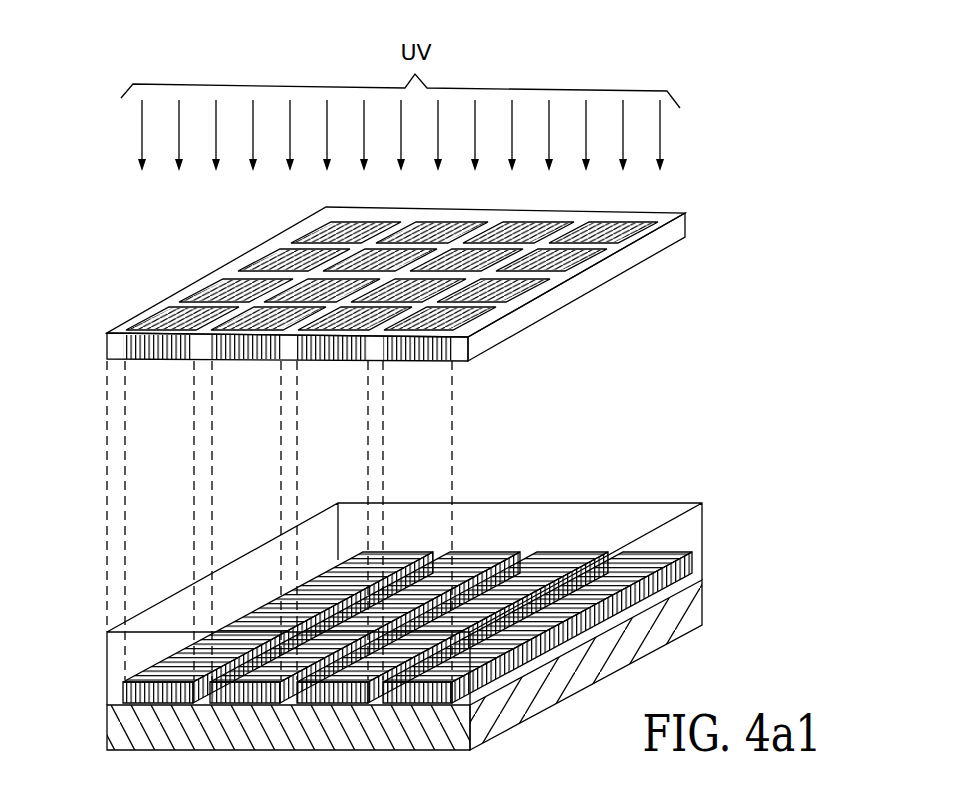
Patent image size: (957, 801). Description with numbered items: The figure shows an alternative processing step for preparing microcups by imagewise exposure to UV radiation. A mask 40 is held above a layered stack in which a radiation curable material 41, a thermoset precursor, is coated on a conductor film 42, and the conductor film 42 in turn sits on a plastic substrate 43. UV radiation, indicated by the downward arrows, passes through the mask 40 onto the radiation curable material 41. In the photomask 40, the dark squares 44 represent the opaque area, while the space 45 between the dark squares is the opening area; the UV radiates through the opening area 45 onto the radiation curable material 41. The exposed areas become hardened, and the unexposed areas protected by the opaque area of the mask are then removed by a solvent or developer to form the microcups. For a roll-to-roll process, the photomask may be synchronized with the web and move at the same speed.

The mask 40 is at (617, 268).
The radiation curable material 41 is at (115, 643).
The conductor film 42 is at (135, 687).
The plastic substrate 43 is at (115, 728).
The dark squares 44 is at (226, 282).
The space between the dark squares 45 is at (192, 302).